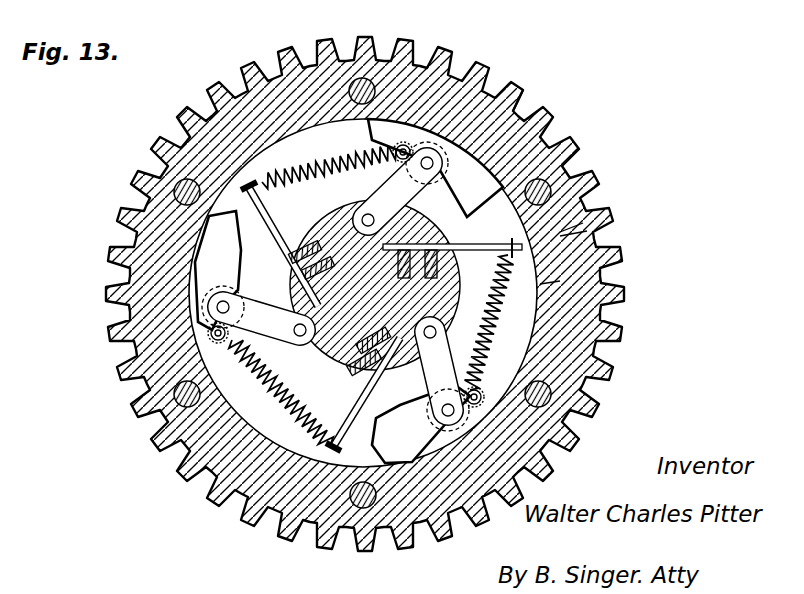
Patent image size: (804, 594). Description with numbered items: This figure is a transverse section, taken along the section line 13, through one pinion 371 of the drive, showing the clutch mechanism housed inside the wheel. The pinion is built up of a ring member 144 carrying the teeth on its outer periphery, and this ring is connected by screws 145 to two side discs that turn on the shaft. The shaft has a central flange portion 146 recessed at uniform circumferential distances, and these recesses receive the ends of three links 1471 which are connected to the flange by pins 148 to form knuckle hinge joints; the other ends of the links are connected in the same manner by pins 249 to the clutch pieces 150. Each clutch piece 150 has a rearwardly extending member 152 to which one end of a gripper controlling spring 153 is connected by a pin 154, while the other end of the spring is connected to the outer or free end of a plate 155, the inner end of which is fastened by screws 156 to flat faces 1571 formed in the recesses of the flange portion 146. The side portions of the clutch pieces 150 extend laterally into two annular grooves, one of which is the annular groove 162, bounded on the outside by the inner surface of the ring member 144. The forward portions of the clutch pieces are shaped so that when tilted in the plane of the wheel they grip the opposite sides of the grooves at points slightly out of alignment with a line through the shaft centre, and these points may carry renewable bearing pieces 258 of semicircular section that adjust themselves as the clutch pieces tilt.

The figure reference 13 is at (428, 9).
The gear wheel 144 is at (540, 124).
The bolt hole 145 is at (358, 85).
The link 146 is at (560, 281).
The cam block 1471 is at (374, 304).
The spring 148 is at (362, 208).
The centrifugal weight 150 is at (495, 187).
The pivot pin 152 is at (560, 378).
The lever arm 153 is at (530, 348).
The screw 154 is at (567, 423).
The block 155 is at (583, 223).
The bar 156 is at (452, 248).
The rod 1571 is at (275, 250).
The hub 162 is at (530, 277).
The rim section 249 is at (447, 130).
The weight 258 is at (421, 424).
The gear tooth 371 is at (520, 92).